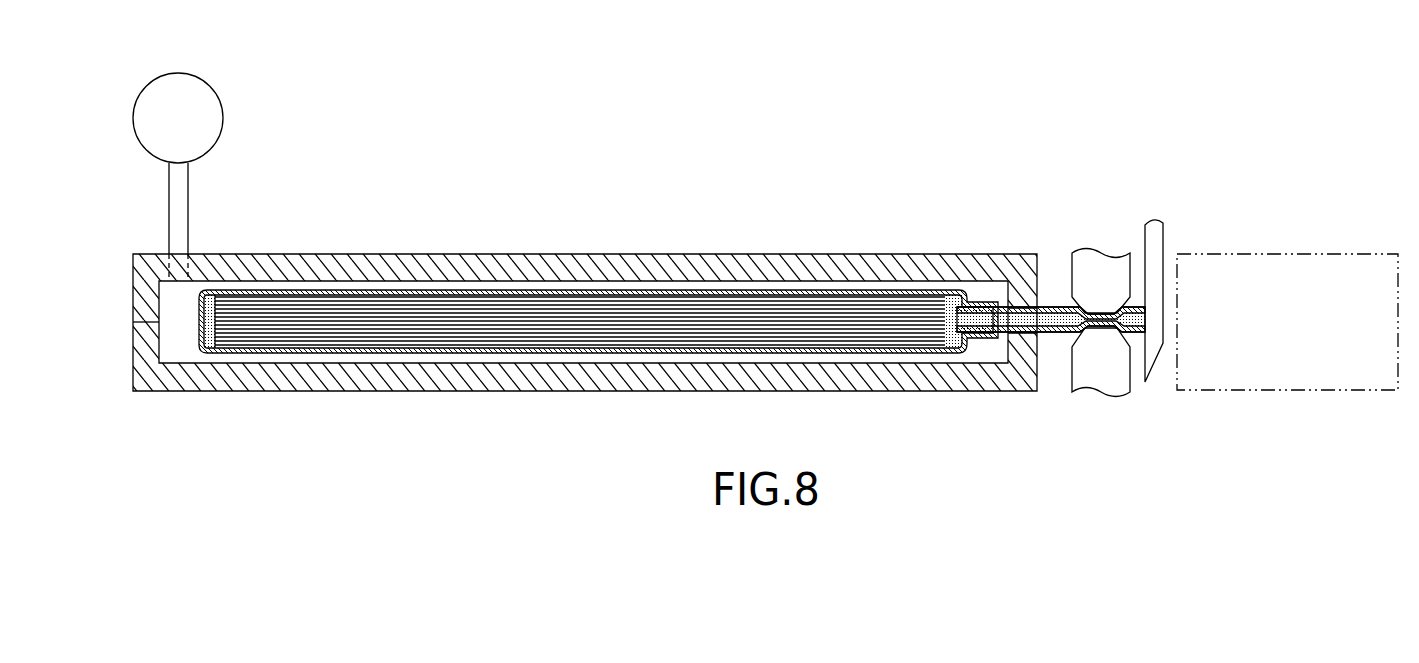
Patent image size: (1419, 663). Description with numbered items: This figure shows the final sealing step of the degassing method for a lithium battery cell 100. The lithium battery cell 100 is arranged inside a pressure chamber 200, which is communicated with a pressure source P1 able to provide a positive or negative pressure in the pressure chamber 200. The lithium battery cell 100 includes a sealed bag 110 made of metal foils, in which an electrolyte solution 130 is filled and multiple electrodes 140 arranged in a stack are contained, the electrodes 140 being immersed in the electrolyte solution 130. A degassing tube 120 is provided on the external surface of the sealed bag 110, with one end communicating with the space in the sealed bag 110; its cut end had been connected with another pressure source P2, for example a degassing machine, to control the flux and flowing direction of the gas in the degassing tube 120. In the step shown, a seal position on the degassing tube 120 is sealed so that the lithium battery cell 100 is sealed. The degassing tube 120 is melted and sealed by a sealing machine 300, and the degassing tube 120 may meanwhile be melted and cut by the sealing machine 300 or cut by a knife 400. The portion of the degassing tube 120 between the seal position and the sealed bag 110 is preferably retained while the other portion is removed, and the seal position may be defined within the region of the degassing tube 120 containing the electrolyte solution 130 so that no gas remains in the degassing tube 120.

The lithium battery cell 100 is at (647, 319).
The sealed bag 110 is at (838, 290).
The degassing tube 120 is at (1053, 337).
The electrolyte solution 130 is at (948, 300).
The electrodes 140 is at (560, 330).
The pressure chamber 200 is at (583, 267).
The sealing machine 300 is at (1103, 268).
The knife 400 is at (1160, 245).
The pressure source P1 is at (177, 78).
The pressure source P2 is at (1288, 260).